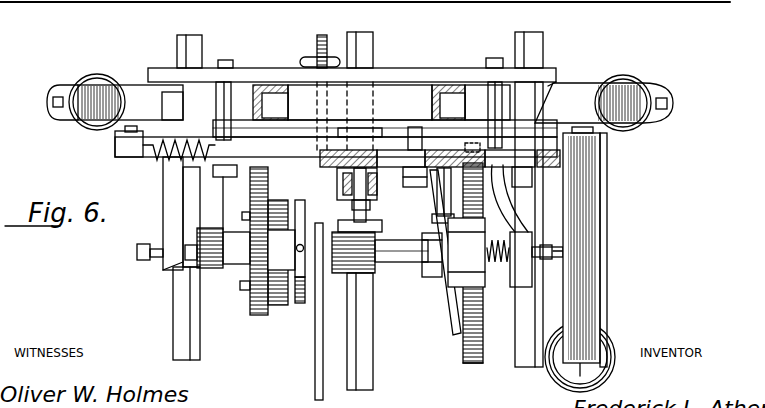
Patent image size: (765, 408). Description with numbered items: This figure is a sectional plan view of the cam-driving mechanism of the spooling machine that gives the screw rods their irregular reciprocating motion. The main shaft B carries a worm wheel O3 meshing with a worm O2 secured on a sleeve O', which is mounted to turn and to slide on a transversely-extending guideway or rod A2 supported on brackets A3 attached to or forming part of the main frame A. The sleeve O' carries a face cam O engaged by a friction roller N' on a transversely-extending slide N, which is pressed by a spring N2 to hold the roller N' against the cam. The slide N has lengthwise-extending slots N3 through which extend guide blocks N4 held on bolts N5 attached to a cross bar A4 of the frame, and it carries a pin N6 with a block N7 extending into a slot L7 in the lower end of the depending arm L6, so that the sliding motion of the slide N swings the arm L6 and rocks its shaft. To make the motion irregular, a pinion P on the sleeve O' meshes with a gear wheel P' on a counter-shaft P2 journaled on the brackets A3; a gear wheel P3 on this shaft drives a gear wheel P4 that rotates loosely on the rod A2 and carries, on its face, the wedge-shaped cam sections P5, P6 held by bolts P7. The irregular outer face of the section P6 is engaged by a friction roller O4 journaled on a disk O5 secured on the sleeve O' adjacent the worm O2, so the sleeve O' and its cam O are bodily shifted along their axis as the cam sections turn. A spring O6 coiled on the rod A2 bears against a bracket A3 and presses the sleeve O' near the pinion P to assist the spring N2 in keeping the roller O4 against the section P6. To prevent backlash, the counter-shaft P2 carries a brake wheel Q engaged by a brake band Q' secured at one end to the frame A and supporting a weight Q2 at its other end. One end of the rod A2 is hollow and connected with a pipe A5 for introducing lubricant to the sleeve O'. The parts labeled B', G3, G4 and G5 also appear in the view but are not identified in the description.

The main frame A is at (634, 94).
The guideway or rod A2 is at (182, 270).
The brackets A3 is at (202, 214).
The cross bar A4 is at (192, 134).
The pipe A5 is at (556, 251).
The main shaft B is at (372, 331).
The bracket B' is at (360, 118).
The rod G3 is at (316, 387).
The screw G4 is at (322, 35).
The screw head G5 is at (300, 62).
The depending arm L6 is at (352, 188).
The slot L7 is at (374, 190).
The slide N is at (427, 134).
The friction roller N' is at (426, 192).
The spring N2 is at (160, 163).
The slots N3 is at (389, 152).
The guide blocks N4 is at (420, 160).
The bolts N5 is at (547, 86).
The pin N6 is at (385, 238).
The block N7 is at (335, 172).
The face cam O is at (438, 254).
The sleeve O' is at (429, 267).
The worm O2 is at (358, 276).
The worm wheel O3 is at (389, 265).
The friction roller O4 is at (297, 249).
The disk O5 is at (301, 306).
The spring O6 is at (497, 266).
The pinion P is at (470, 253).
The gear wheel P' is at (473, 376).
The counter-shaft P2 is at (557, 244).
The gear wheel P3 is at (258, 318).
The gear wheel P4 is at (246, 292).
The cam section P5 is at (327, 208).
The cam section P6 is at (284, 305).
The bolts P7 is at (247, 208).
The brake wheel Q is at (643, 250).
The brake band Q' is at (602, 245).
The weight Q2 is at (611, 350).